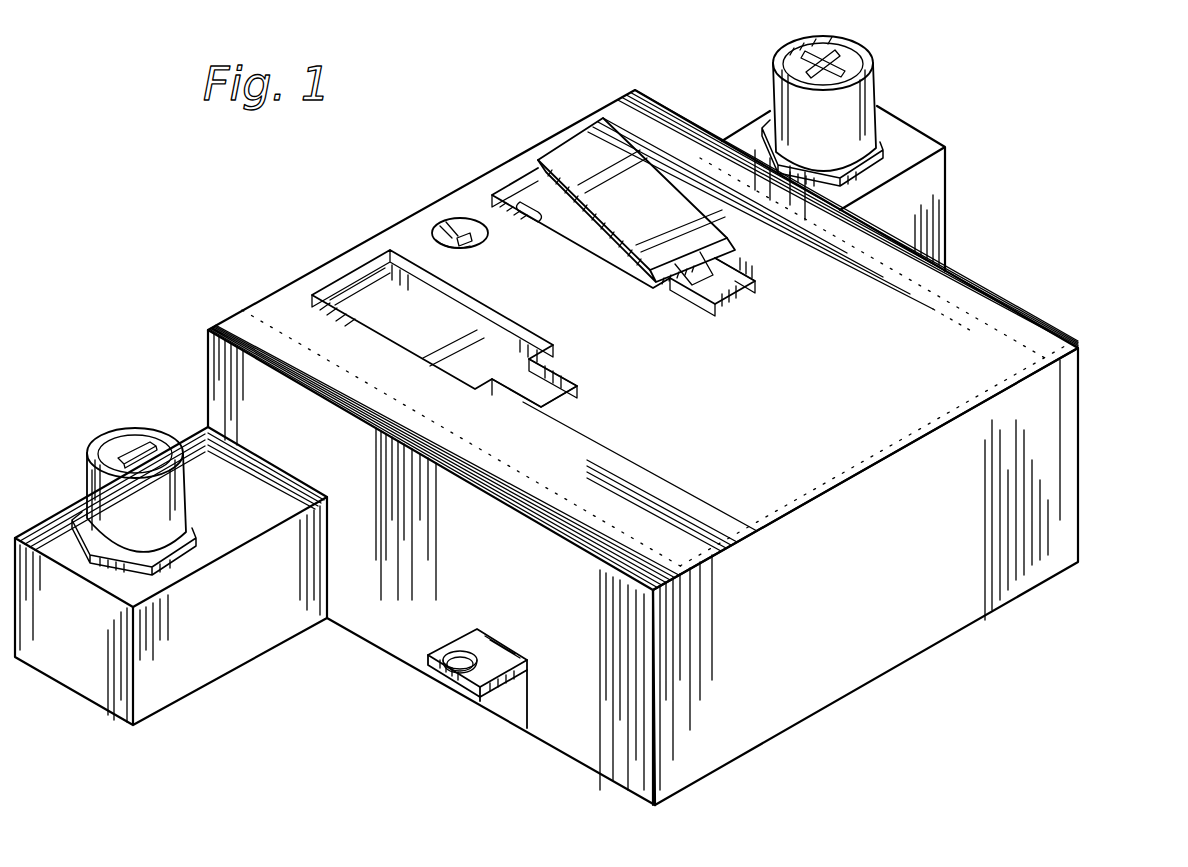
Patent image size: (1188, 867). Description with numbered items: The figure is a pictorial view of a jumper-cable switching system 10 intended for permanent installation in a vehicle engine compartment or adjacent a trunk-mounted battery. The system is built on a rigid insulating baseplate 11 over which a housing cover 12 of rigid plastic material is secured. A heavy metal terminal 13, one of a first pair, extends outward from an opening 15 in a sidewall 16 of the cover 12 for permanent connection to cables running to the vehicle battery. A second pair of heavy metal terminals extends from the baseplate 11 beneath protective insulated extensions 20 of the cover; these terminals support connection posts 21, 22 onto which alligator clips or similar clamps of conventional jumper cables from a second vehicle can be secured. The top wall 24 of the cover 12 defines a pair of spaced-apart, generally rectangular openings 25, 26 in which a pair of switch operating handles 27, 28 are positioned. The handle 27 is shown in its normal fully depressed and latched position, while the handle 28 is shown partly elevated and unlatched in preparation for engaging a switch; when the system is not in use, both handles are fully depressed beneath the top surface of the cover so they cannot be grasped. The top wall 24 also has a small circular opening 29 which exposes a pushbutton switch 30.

The jumper-cable switching system 10 is at (689, 447).
The rigid insulating baseplate 11 is at (507, 688).
The housing cover 12 is at (1092, 440).
The heavy metal terminal 13 is at (453, 698).
The opening 15 is at (525, 700).
The sidewall 16 is at (408, 640).
The protective insulated extension 20 is at (190, 675).
The connection post 21 is at (125, 430).
The connection post 22 is at (870, 76).
The top wall 24 is at (1050, 336).
The rectangular opening 25 is at (490, 317).
The rectangular opening 26 is at (619, 203).
The switch operating handle 27 is at (352, 292).
The switch operating handle 28 is at (530, 172).
The circular opening 29 is at (461, 222).
The pushbutton switch 30 is at (426, 201).